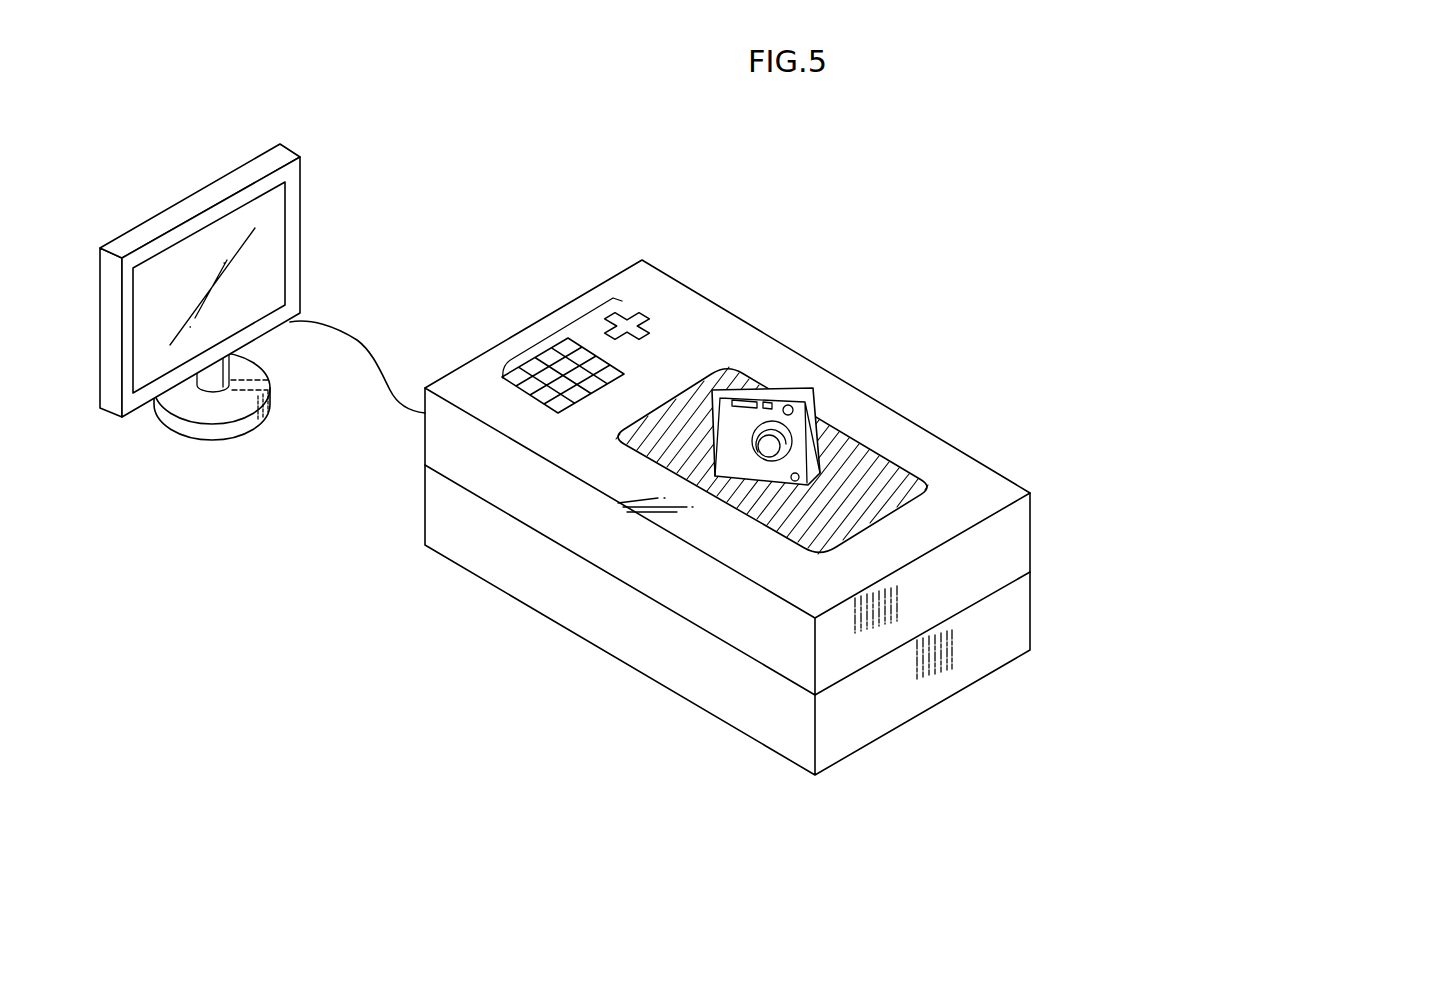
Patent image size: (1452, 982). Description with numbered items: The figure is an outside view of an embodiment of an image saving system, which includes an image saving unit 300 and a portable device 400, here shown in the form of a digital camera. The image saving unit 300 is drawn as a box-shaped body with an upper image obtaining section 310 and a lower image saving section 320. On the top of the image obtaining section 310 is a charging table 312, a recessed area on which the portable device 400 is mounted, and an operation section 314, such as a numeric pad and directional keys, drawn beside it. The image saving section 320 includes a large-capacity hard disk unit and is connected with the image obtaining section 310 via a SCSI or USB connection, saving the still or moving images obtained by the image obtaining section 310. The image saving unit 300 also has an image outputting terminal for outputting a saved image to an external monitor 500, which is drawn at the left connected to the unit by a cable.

The image saving unit 300 is at (916, 496).
The image obtaining section 310 is at (1032, 527).
The charging table 312 is at (933, 478).
The operation section 314 is at (557, 330).
The image saving section 320 is at (1032, 613).
The portable device 400 is at (803, 378).
The external monitor 500 is at (300, 233).